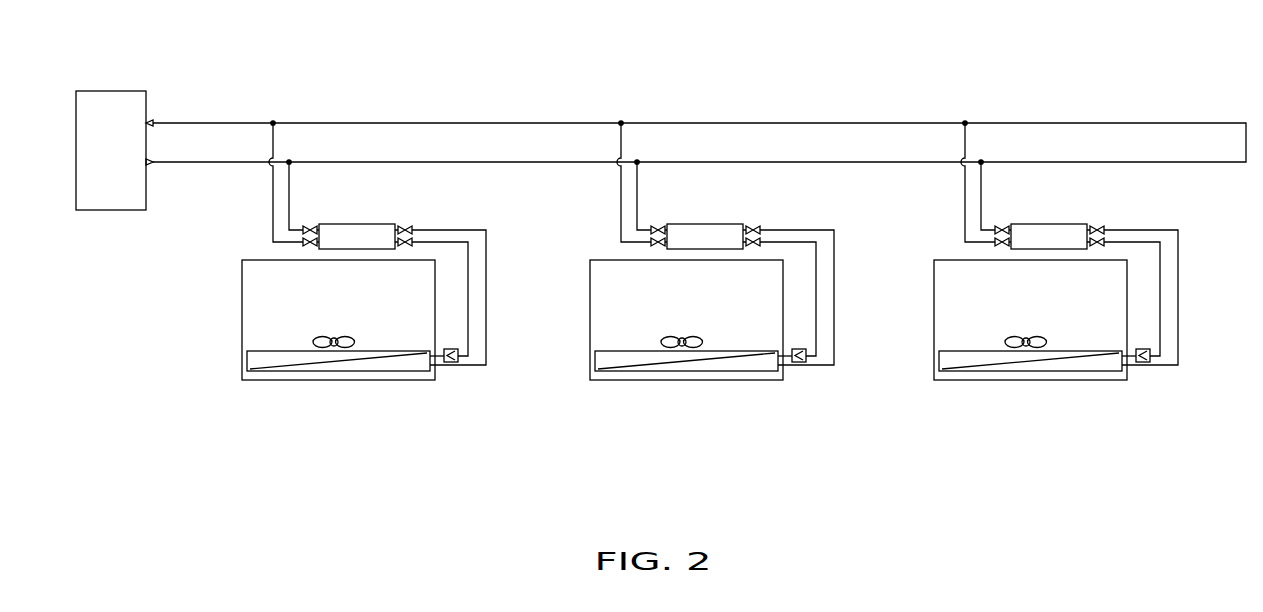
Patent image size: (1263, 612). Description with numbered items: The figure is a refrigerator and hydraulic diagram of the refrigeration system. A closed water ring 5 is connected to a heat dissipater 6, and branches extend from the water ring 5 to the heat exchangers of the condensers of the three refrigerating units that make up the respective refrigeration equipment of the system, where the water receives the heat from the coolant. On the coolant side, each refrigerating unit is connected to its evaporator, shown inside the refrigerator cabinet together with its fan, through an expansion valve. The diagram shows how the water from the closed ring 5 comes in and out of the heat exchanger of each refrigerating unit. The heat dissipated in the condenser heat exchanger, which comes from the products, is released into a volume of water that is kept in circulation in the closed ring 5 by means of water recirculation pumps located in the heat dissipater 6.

The water ring 5 is at (517, 161).
The dissipater 6 is at (99, 122).